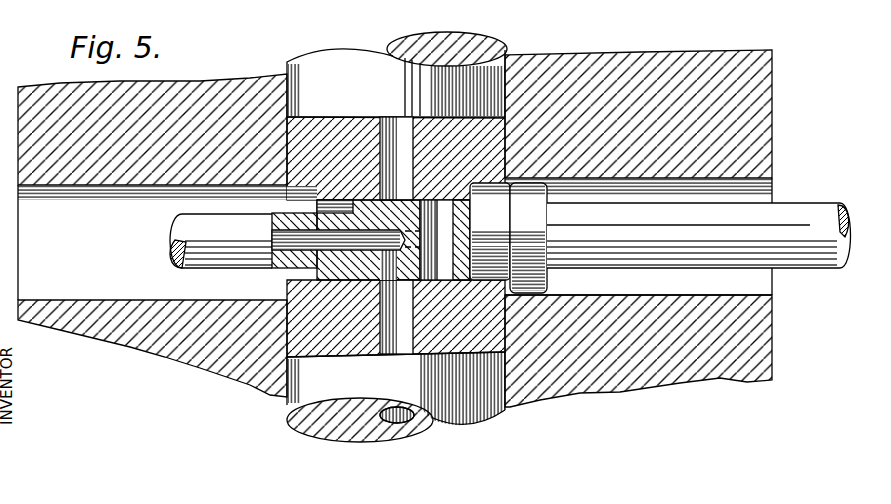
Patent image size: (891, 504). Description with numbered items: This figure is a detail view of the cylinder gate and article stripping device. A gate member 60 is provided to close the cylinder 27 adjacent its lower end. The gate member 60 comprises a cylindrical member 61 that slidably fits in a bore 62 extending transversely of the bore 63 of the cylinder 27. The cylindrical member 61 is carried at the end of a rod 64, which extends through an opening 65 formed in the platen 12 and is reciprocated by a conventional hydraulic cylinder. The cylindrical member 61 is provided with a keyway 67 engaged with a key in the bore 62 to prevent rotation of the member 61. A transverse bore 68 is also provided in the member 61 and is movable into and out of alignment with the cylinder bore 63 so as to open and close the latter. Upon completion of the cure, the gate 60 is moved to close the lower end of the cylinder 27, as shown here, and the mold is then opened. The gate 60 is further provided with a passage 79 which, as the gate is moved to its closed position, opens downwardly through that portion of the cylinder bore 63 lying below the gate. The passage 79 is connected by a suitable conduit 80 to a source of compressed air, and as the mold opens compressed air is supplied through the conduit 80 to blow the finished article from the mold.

The platen 12 is at (775, 66).
The cylinder 27 is at (497, 40).
The gate member 60 is at (553, 237).
The cylindrical member 61 is at (360, 190).
The bore 62 is at (300, 283).
The bore of cylinder 63 is at (412, 158).
The rod 64 is at (815, 268).
The opening 65 is at (760, 297).
The keyway 67 is at (530, 235).
The transverse bore 68 is at (450, 226).
The passage 79 is at (402, 262).
The conduit 80 is at (241, 213).